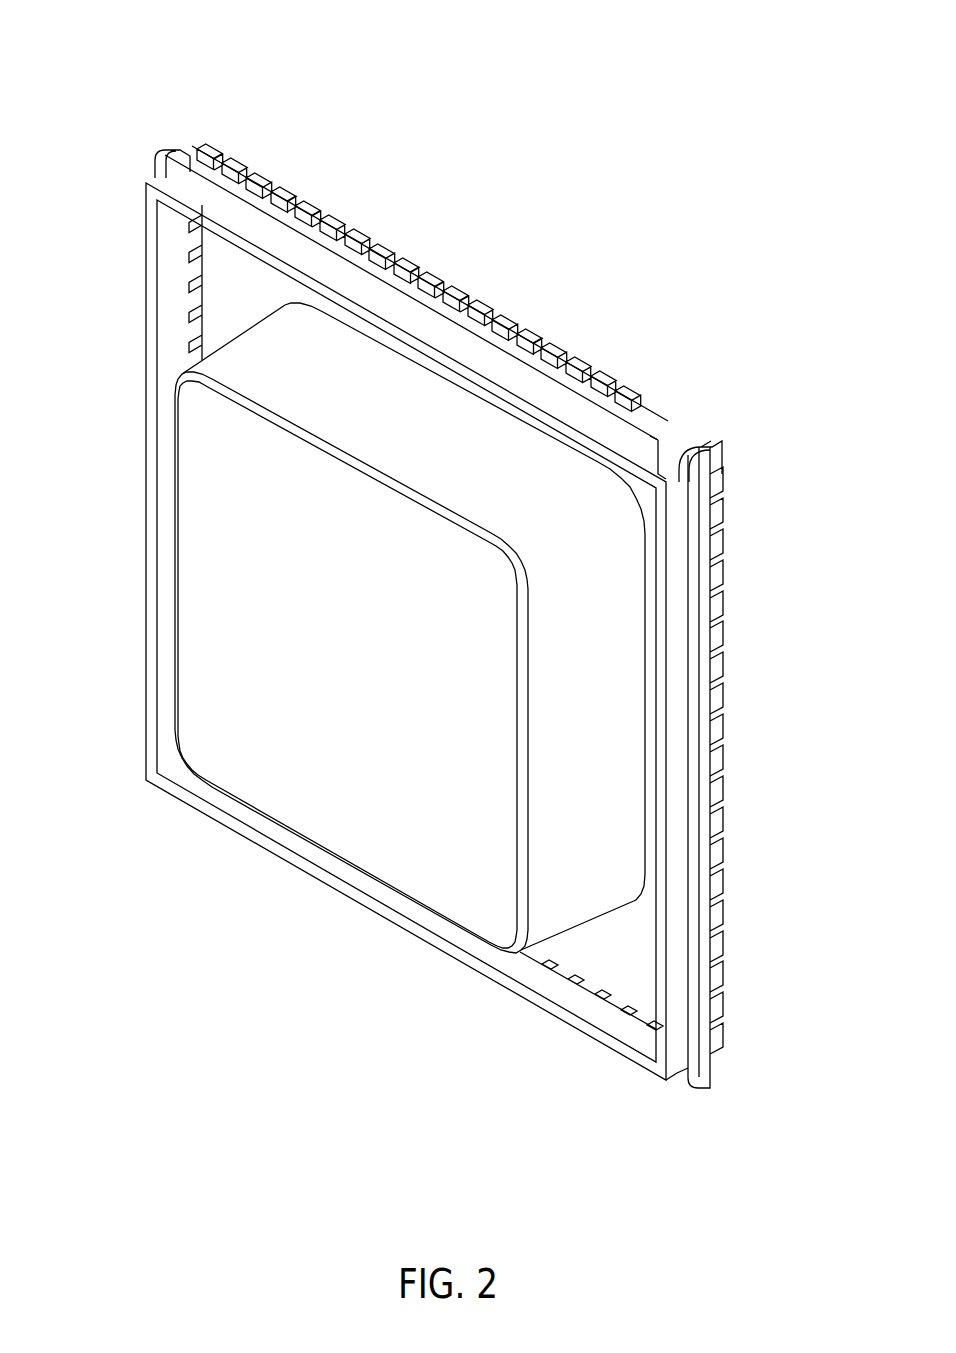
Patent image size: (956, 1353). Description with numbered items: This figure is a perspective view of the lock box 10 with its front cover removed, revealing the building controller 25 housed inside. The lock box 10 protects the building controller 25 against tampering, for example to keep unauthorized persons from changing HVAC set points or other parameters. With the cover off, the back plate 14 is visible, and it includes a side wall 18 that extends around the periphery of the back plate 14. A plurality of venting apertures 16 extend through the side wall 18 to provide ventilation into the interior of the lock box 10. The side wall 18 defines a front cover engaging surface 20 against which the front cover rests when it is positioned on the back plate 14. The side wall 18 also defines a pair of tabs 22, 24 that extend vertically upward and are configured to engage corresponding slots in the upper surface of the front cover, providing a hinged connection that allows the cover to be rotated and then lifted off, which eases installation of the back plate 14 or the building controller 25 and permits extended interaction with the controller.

The lock box 10 is at (203, 62).
The back plate 14 is at (718, 445).
The venting apertures 16 is at (192, 278).
The side wall 18 is at (147, 477).
The front cover engaging surface 20 is at (693, 1078).
The tab 22 is at (185, 190).
The tab 24 is at (640, 455).
The building controller 25 is at (358, 654).